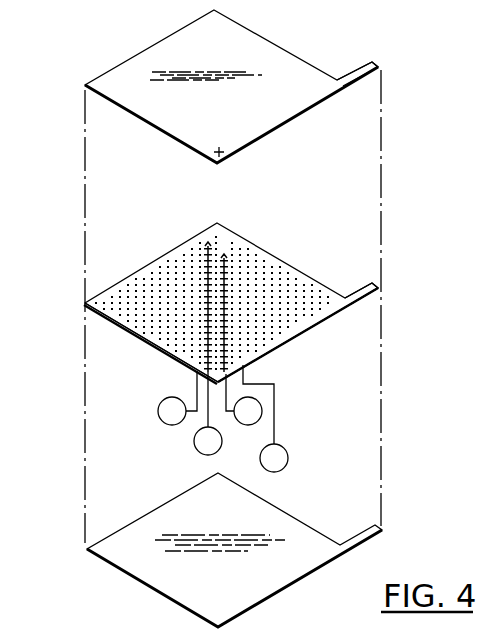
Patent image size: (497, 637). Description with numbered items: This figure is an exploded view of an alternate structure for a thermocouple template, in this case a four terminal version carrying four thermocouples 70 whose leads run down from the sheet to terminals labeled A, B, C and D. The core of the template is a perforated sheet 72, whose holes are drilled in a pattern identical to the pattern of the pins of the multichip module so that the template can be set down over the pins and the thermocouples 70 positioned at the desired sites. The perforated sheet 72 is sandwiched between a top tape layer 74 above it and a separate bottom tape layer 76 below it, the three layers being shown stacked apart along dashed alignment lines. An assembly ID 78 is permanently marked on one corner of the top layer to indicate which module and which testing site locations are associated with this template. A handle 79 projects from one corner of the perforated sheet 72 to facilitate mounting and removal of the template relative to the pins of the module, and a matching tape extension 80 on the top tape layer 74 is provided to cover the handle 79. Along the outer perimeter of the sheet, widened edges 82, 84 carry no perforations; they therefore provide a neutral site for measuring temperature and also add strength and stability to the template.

The thermocouple 70 is at (260, 464).
The perforated sheet 72 is at (262, 250).
The top tape layer 74 is at (163, 37).
The bottom tape layer 76 is at (110, 532).
The assembly ID 78 is at (217, 151).
The handle 79 is at (368, 298).
The tape extension 80 is at (380, 63).
The widened edge 82 is at (130, 336).
The widened edge 84 is at (287, 345).